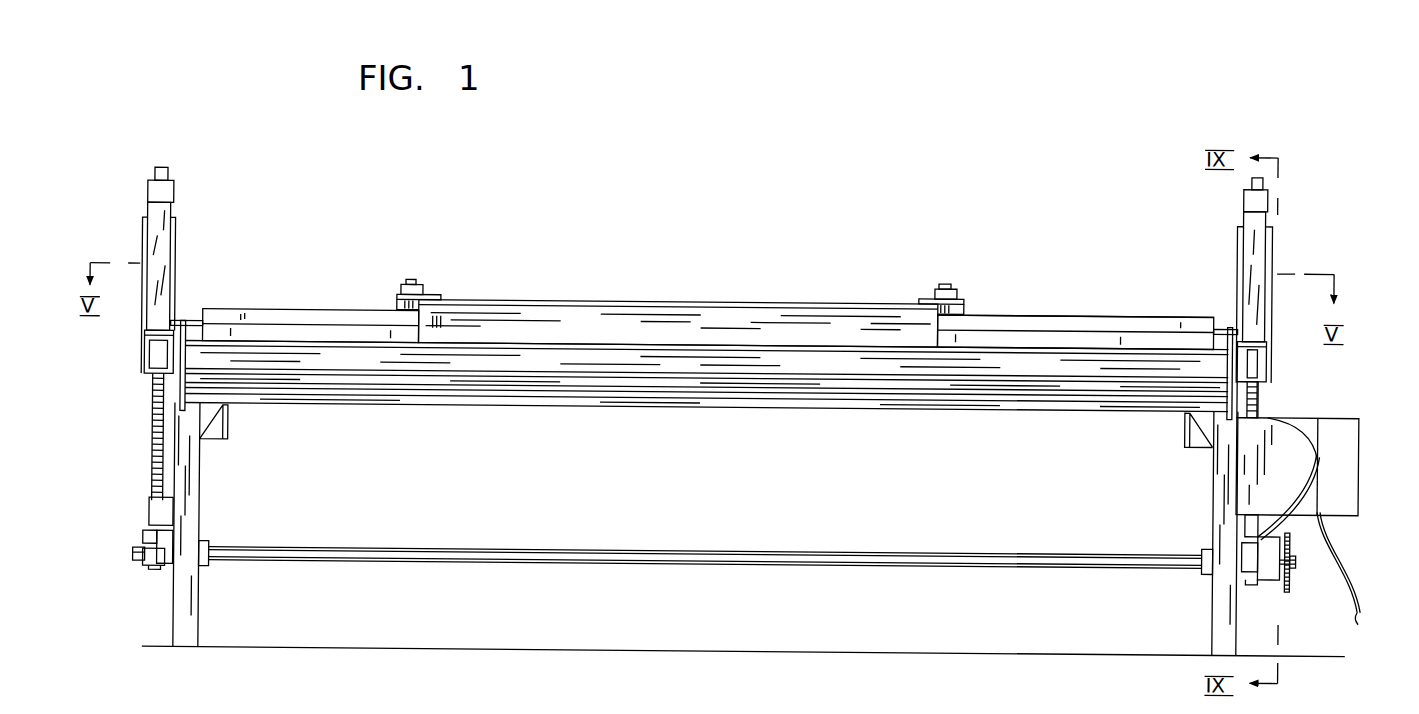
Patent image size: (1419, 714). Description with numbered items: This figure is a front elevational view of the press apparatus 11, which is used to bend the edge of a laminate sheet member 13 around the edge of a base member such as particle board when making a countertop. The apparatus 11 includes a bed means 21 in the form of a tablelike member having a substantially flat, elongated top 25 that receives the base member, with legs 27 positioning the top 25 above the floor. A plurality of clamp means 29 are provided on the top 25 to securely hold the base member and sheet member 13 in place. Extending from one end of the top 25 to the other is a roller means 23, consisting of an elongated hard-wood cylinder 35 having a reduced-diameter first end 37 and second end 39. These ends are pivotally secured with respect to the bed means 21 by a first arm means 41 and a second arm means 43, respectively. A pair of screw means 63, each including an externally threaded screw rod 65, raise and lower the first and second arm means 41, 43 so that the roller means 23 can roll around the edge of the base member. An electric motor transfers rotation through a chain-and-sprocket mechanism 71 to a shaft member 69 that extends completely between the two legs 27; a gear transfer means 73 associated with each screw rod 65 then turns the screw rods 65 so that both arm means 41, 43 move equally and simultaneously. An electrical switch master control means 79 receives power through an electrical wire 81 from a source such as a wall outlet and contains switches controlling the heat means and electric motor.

The apparatus 11 is at (1170, 99).
The sheet member 13 is at (705, 302).
The bed means 21 is at (1088, 330).
The roller means 23 is at (1113, 372).
The top 25 is at (1047, 314).
The legs 27 is at (705, 528).
The clamp means 29 is at (399, 274).
The cylinder 35 is at (803, 370).
The first end 37 is at (1289, 362).
The second end 39 is at (128, 364).
The first arm means 41 is at (1288, 234).
The second arm means 43 is at (139, 191).
The screw means 63 is at (141, 444).
The screw rod 65 is at (1356, 363).
The shaft member 69 is at (1057, 563).
The chain-and-sprocket mechanism 71 is at (1297, 578).
The gear transfer means 73 is at (153, 583).
The electrical switch master control means 79 is at (1360, 502).
The electrical wire 81 is at (1332, 521).